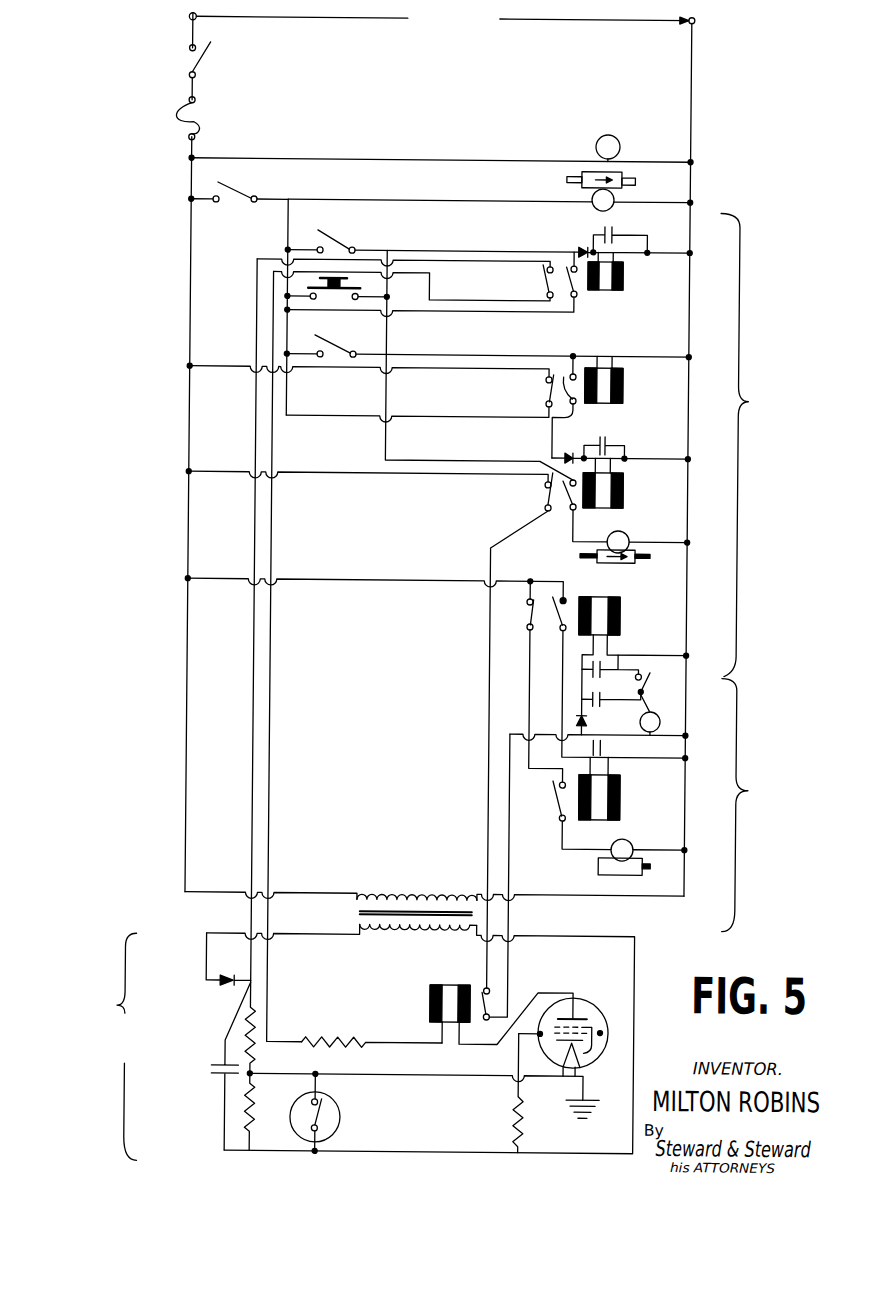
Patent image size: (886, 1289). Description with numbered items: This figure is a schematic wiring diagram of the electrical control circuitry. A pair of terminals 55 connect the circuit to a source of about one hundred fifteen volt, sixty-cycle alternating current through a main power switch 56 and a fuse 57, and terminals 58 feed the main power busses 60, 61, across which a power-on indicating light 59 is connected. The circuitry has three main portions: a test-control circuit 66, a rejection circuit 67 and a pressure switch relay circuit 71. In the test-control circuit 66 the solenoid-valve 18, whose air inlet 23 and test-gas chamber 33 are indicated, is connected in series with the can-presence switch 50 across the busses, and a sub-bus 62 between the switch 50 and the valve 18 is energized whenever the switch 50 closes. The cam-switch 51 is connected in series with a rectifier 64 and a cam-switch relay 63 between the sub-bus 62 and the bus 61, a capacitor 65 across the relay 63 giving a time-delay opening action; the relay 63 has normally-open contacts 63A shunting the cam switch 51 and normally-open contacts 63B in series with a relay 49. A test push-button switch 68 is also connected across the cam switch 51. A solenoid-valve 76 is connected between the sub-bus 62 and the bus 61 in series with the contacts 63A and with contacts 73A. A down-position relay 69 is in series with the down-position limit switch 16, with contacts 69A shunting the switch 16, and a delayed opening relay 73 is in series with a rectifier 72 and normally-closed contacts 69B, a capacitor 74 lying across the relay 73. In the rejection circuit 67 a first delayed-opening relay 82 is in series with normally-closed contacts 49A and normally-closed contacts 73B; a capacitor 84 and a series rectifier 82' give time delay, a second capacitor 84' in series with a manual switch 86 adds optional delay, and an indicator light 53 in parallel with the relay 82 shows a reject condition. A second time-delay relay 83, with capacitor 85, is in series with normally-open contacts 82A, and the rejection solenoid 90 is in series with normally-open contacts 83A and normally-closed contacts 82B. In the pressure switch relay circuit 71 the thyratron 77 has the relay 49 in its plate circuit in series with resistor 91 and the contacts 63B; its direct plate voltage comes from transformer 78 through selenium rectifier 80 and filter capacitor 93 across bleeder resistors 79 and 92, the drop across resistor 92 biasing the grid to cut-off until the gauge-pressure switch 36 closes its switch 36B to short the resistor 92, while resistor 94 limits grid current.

The terminals 55 is at (190, 15).
The main power switch 56 is at (190, 60).
The fuse 57 is at (184, 116).
The terminals 58 is at (191, 155).
The power-on indicating light 59 is at (620, 132).
The air inlet 23 is at (569, 172).
The test-gas chamber 33 is at (636, 178).
The solenoid-valve 18 is at (596, 198).
The can-presence switch 50 is at (238, 196).
The sub-bus 62 is at (290, 226).
The cam-switch 51 is at (346, 235).
The test push-button switch 68 is at (326, 291).
The down position limit switch 16 is at (339, 337).
The main power bus 60 is at (191, 398).
The main power bus 61 is at (697, 403).
The capacitor 65 is at (618, 222).
The rectifier 64 is at (581, 242).
The cam-switch relay 63 is at (628, 271).
The normally-open contacts 63B is at (546, 279).
The normally-open contacts 63A is at (579, 289).
The test head down position relay 69 is at (628, 380).
The normally-closed contacts 69B is at (552, 388).
The contacts 69A is at (583, 400).
The capacitor 74 is at (612, 432).
The rectifier 72 is at (572, 447).
The delayed opening relay 73 is at (630, 487).
The normally-closed contacts 73B is at (552, 498).
The contacts 73A is at (571, 505).
The solenoid-valve 76 is at (631, 526).
The first delayed-opening relay 82 is at (632, 652).
The normally-closed contacts 82B is at (540, 597).
The normally-open contacts 82A is at (566, 608).
The capacitor 84 is at (617, 656).
The second capacitor 84' is at (611, 688).
The switch 86 is at (653, 672).
The indicator light 53 is at (660, 694).
The rectifier 82' is at (598, 724).
The capacitor 85 is at (610, 744).
The second time-delay-opening relay 83 is at (628, 781).
The normally-open contacts 83A is at (560, 790).
The rejection solenoid 90 is at (629, 836).
The test-control circuit 66 is at (798, 383).
The rejection circuit 67 is at (803, 763).
The transformer 78 is at (368, 909).
The pressure switch relay circuit 71 is at (114, 1019).
The selenium rectifier 80 is at (234, 988).
The bleeder resistor 79 is at (263, 1042).
The filter capacitor 93 is at (230, 1070).
The bleeder resistor 92 is at (262, 1120).
The switch 36B is at (342, 1100).
The gauge-pressure switch 36 is at (347, 1133).
The resistor 91 is at (355, 1039).
The resistor 94 is at (522, 1116).
The relay 49 is at (438, 994).
The normally-closed contacts 49A is at (494, 980).
The thyratron tube 77 is at (616, 990).